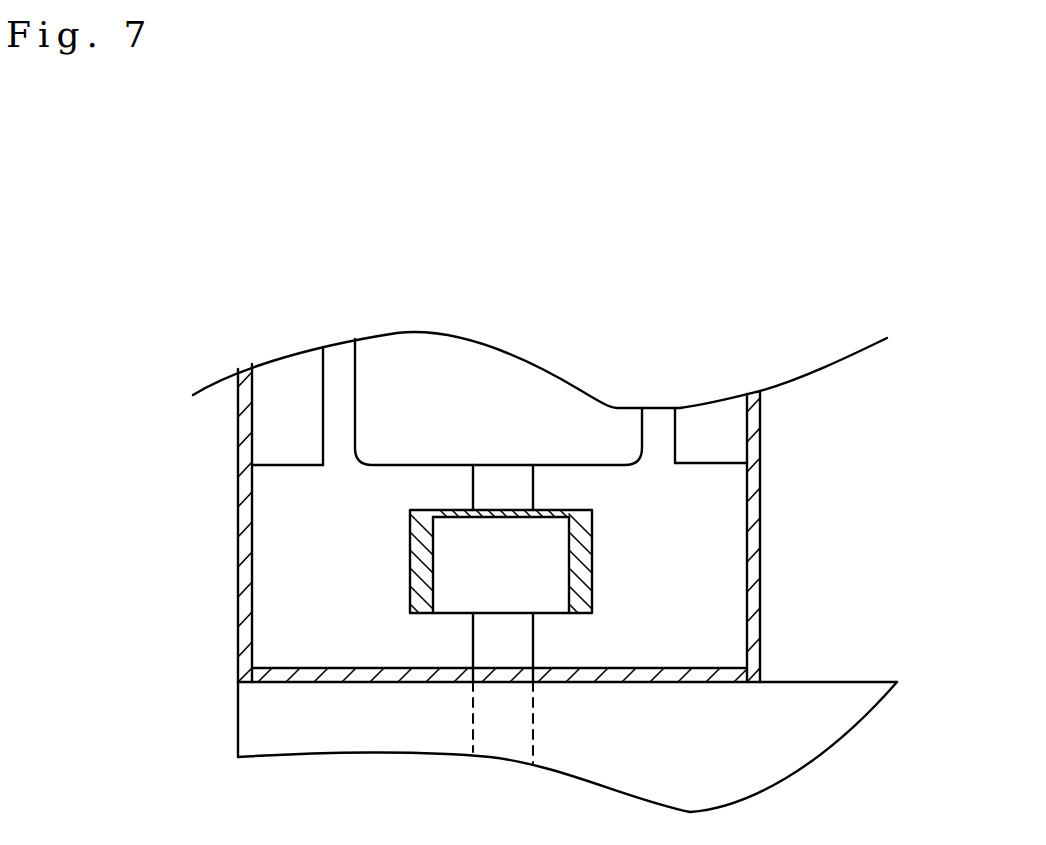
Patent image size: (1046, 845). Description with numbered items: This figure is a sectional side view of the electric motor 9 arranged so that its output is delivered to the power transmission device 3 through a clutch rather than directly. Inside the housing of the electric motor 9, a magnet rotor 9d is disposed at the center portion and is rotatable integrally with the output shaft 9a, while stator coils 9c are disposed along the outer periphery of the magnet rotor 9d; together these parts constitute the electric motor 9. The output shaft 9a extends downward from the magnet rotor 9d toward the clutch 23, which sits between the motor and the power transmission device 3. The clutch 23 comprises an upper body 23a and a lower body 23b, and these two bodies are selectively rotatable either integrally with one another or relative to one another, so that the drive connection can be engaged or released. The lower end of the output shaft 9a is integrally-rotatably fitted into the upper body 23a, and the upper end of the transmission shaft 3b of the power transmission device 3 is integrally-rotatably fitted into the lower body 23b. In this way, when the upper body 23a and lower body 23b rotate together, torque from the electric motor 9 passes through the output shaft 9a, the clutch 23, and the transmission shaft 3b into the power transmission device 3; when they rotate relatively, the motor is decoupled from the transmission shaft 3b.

The power transmission device 3 is at (230, 727).
The transmission shaft 3b is at (487, 642).
The electric motor 9 is at (230, 495).
The output shaft 9a is at (473, 492).
The stator coils 9c is at (306, 432).
The magnet rotor 9d is at (498, 422).
The clutch 23 is at (494, 580).
The upper body 23a is at (585, 540).
The lower body 23b is at (543, 605).